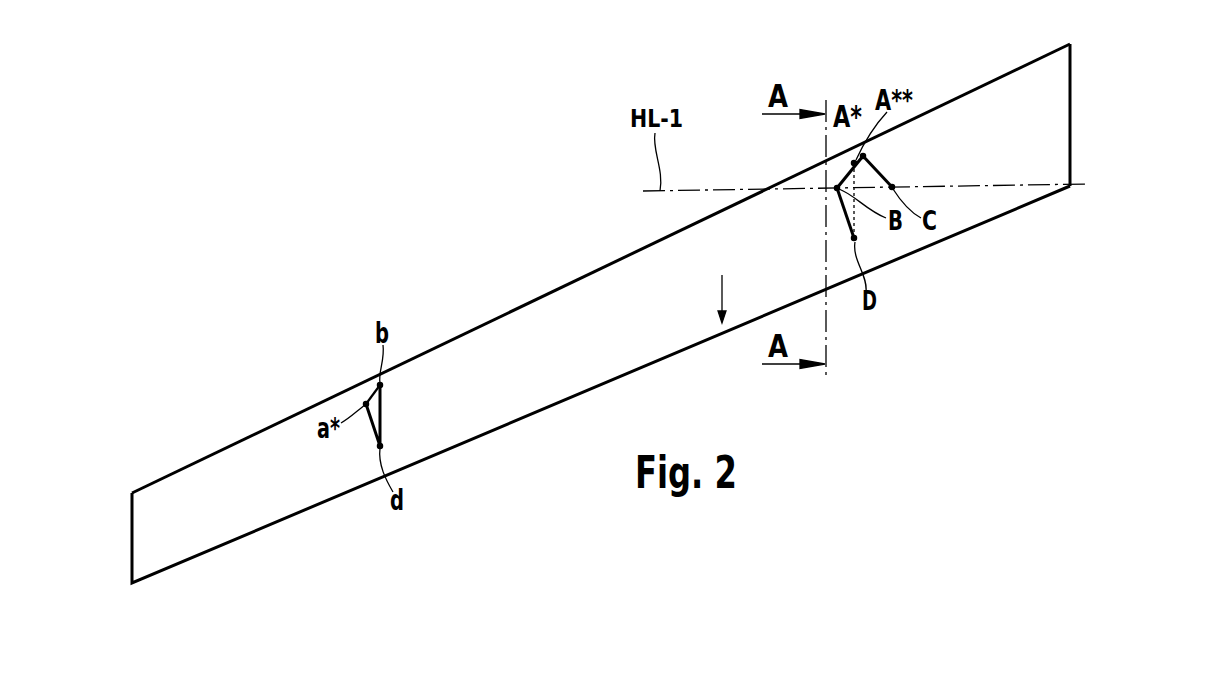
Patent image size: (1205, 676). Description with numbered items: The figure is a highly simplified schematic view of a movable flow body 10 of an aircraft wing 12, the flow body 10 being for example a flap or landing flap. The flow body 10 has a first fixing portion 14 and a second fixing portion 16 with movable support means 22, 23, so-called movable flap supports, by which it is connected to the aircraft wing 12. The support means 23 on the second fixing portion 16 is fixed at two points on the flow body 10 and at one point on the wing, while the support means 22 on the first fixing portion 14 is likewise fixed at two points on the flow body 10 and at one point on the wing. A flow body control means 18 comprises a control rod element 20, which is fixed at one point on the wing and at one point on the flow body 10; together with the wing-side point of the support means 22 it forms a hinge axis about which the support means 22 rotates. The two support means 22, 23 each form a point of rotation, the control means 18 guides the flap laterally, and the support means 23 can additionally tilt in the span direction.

The flow body 10 is at (661, 313).
The aircraft wing 12 is at (1108, 95).
The first fixing portion 14 is at (802, 166).
The second fixing portion 16 is at (356, 383).
The flow body control means 18 is at (900, 175).
The control rod element 20 is at (887, 150).
The support means 22 is at (870, 228).
The support means 23 is at (399, 431).